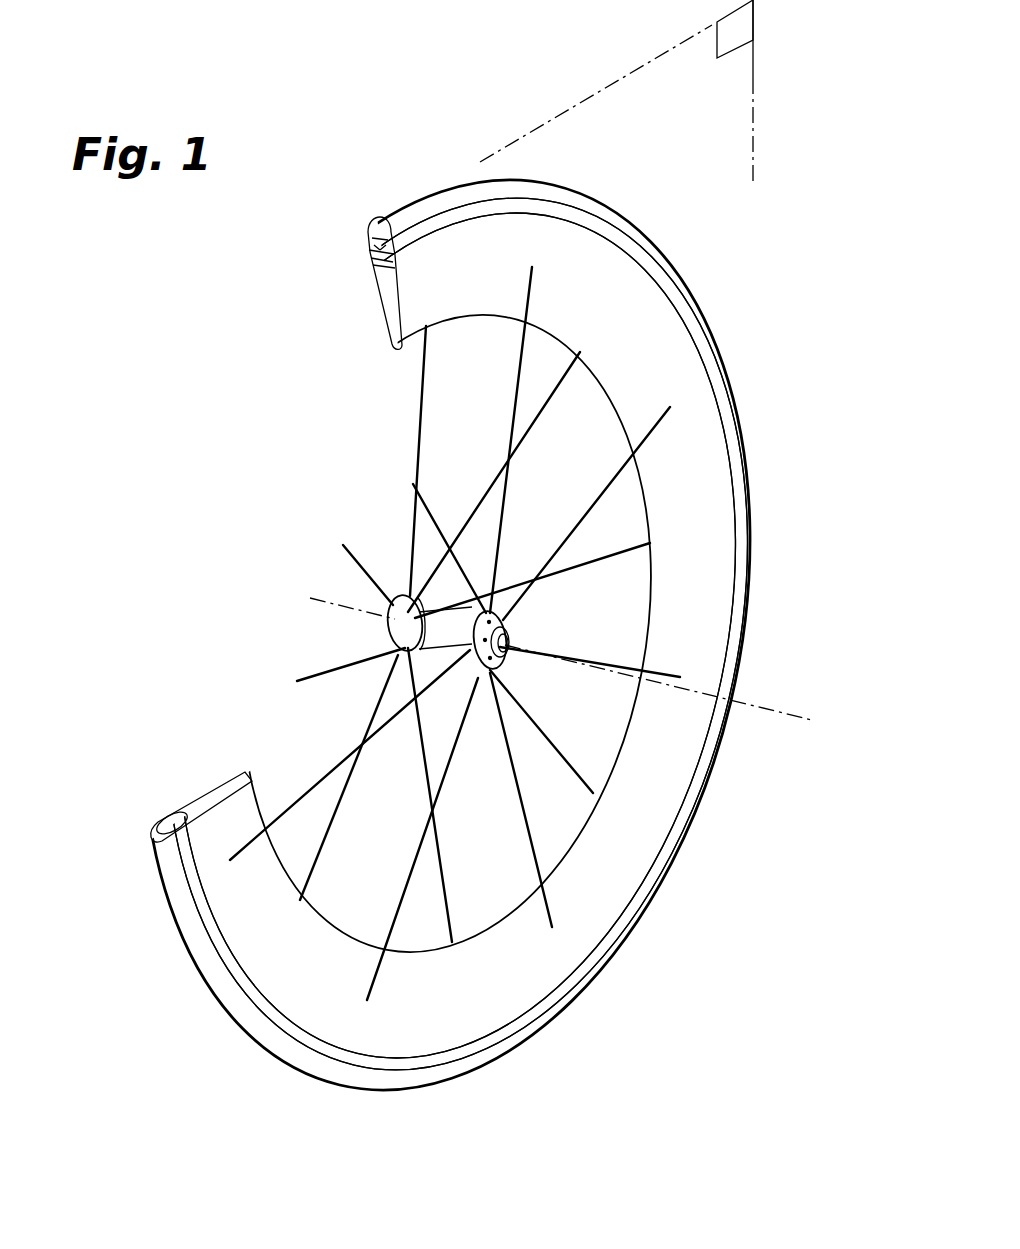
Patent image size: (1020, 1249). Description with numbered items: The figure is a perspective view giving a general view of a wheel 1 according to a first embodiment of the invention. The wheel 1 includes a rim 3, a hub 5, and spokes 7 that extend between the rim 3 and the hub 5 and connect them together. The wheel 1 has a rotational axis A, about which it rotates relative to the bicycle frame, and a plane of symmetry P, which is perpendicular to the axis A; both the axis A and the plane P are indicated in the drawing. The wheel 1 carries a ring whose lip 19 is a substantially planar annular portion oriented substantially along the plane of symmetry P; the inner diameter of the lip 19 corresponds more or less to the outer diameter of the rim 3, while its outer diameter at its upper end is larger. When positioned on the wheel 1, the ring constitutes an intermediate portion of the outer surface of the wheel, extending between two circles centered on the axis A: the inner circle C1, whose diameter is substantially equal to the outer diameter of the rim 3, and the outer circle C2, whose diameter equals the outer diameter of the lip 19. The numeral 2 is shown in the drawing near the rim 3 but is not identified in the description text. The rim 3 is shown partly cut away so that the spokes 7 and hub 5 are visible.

The wheel 1 is at (778, 402).
The rim 2 is at (419, 207).
The rim 3 is at (393, 340).
The hub 5 is at (353, 638).
The spokes 7 is at (415, 462).
The lip 19 is at (433, 228).
The inner circle C1 is at (661, 310).
The outer circle C2 is at (665, 267).
The rotational axis A is at (773, 712).
The plane of symmetry P is at (616, 91).